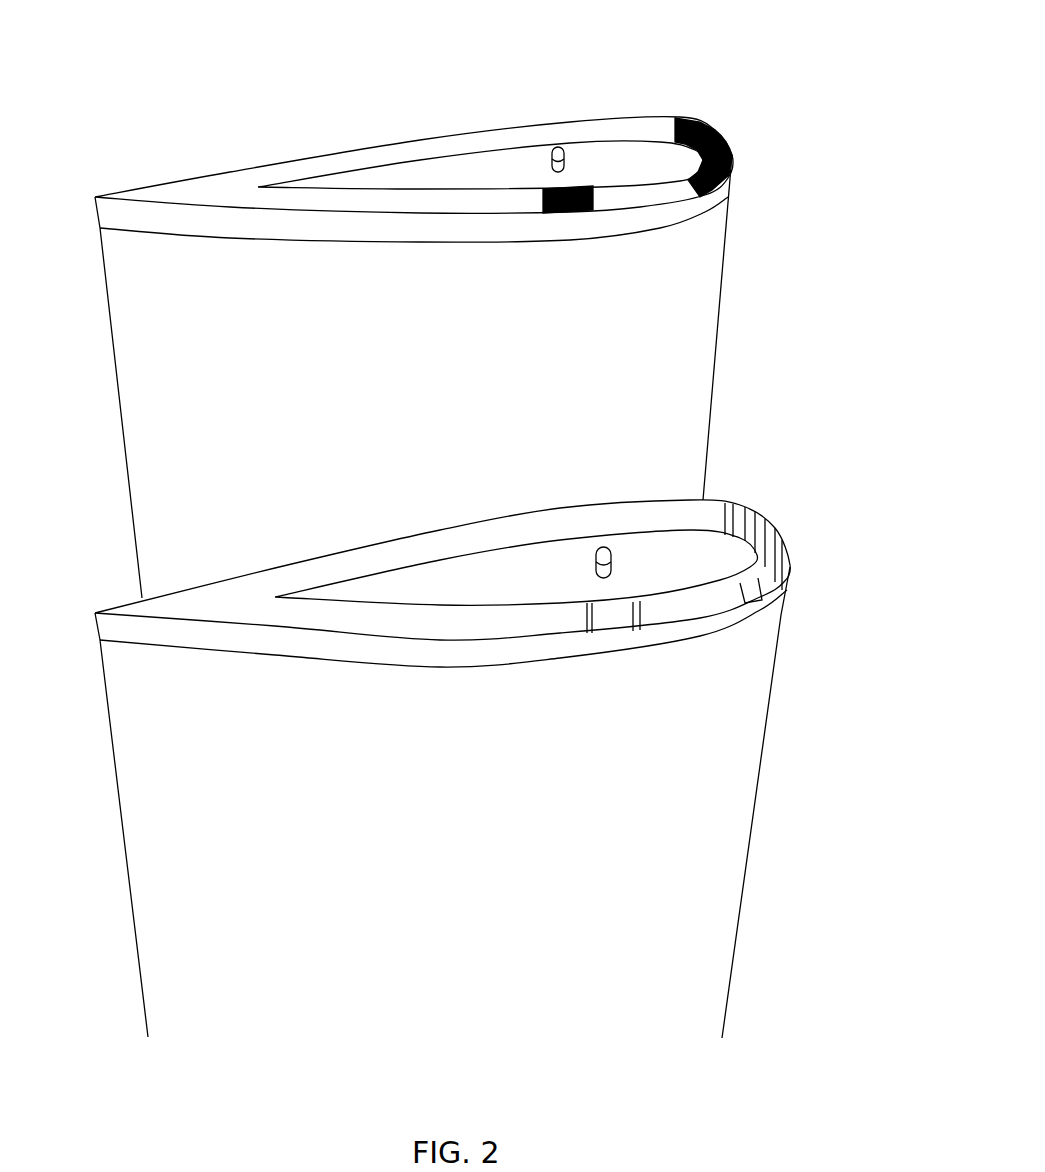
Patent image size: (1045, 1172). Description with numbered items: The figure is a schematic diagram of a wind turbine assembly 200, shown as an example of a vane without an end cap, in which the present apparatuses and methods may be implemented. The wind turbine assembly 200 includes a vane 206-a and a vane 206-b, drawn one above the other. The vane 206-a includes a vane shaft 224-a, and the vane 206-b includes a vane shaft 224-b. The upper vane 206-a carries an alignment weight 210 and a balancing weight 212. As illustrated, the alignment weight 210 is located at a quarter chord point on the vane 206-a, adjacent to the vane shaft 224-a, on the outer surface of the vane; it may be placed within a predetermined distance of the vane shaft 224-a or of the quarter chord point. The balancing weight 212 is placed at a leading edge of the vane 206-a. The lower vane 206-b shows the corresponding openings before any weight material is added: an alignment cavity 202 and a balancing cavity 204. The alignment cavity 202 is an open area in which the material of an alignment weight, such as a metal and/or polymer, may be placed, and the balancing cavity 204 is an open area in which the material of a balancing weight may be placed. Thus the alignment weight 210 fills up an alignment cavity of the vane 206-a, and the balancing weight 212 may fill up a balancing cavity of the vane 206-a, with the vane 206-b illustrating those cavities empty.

The wind turbine assembly 200 is at (165, 62).
The vane 206-a is at (833, 100).
The vane 206-b is at (878, 505).
The vane shaft 224-a is at (556, 140).
The vane shaft 224-b is at (604, 545).
The alignment weight 210 is at (582, 185).
The balancing weight 212 is at (707, 128).
The balancing cavity 204 is at (759, 520).
The alignment cavity 202 is at (623, 626).